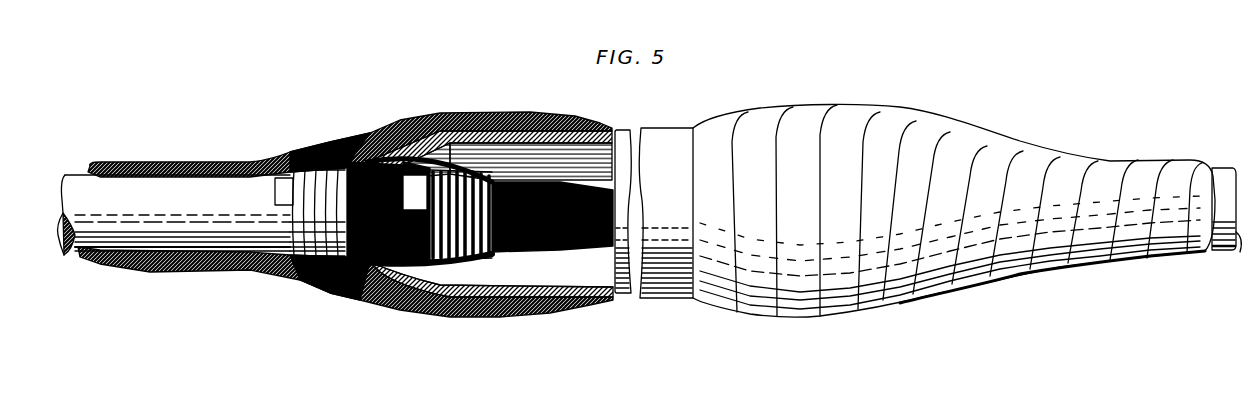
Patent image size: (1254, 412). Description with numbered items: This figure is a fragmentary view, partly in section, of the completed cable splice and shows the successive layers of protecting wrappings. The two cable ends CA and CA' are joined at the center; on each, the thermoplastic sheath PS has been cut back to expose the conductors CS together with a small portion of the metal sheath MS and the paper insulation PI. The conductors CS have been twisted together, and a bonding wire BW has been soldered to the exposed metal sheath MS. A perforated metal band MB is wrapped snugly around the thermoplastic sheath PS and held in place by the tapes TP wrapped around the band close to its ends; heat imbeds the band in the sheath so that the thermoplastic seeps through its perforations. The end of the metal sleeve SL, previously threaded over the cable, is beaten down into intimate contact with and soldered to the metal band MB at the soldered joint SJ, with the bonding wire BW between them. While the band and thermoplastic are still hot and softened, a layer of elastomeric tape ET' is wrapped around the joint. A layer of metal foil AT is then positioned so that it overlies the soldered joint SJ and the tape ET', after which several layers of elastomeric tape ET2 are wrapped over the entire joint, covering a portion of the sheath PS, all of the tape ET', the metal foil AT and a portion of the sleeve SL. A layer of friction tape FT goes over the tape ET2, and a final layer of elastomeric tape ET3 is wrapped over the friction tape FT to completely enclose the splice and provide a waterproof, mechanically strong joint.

The elastomeric tape ET3 is at (147, 162).
The elastomeric tape ET2 is at (340, 140).
The elastomeric tape ET' is at (263, 193).
The friction tape FT is at (262, 160).
The metal foil AT is at (388, 122).
The bonding wire BW is at (453, 112).
The thermoplastic sheath PS is at (130, 237).
The cable end CA is at (72, 237).
The cable end CA' is at (1220, 263).
The metal sleeve SL is at (660, 293).
The conductors CS is at (570, 241).
The paper insulation PI is at (491, 244).
The metal sheath MS is at (477, 249).
The tapes TP is at (442, 263).
The perforated metal band MB is at (408, 208).
The soldered joint SJ is at (387, 308).